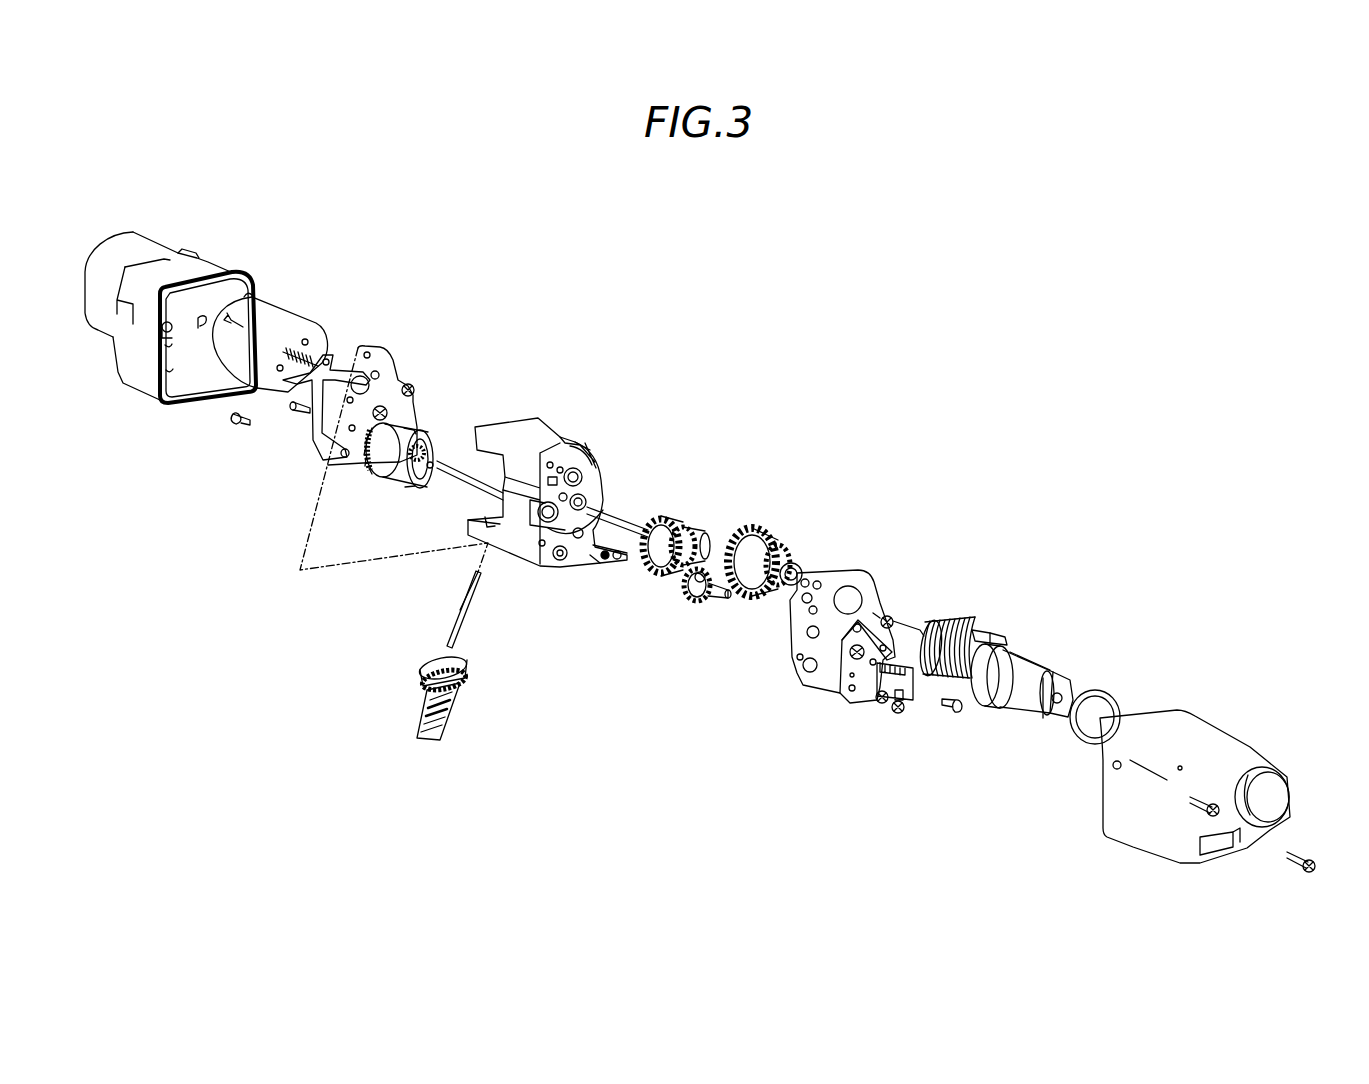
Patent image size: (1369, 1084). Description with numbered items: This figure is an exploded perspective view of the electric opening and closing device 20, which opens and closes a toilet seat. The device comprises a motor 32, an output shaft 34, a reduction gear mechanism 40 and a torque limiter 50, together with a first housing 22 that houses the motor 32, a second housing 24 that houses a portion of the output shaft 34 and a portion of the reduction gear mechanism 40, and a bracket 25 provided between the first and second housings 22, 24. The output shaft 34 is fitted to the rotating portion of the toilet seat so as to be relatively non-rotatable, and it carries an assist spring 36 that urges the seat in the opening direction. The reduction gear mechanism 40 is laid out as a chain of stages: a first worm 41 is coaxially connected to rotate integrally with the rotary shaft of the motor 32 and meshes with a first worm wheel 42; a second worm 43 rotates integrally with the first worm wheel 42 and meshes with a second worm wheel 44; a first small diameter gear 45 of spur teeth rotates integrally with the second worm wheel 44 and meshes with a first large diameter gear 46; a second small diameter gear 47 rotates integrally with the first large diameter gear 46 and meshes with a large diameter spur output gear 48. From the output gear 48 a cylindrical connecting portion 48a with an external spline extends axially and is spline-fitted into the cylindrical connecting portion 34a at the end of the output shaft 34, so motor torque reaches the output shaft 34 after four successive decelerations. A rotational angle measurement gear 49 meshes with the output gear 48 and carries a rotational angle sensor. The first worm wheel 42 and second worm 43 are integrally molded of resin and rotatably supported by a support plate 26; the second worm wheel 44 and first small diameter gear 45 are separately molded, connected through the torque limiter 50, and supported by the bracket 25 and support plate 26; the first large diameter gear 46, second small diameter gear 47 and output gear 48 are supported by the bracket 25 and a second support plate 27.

The electric opening and closing device 20 is at (1097, 442).
The first housing 22 is at (205, 275).
The second housing 24 is at (1181, 725).
The bracket 25 is at (545, 423).
The support plate 26 is at (375, 347).
The second support plate 27 is at (866, 575).
The motor 32 is at (133, 242).
The output shaft 34 is at (1007, 632).
The cylindrical connecting portion 34a is at (980, 630).
The assist spring 36 is at (967, 618).
The reduction gear mechanism 40 is at (625, 610).
The first worm 41 is at (293, 410).
The first worm wheel 42 is at (421, 673).
The second worm 43 is at (424, 735).
The second worm wheel 44 is at (374, 472).
The first small diameter gear 45 is at (413, 488).
The first large diameter gear 46 is at (680, 523).
The second small diameter gear 47 is at (680, 598).
The output gear 48 is at (778, 524).
The cylindrical connecting portion 48a is at (797, 563).
The rotational angle measurement gear 49 is at (716, 600).
The torque limiter 50 is at (403, 449).